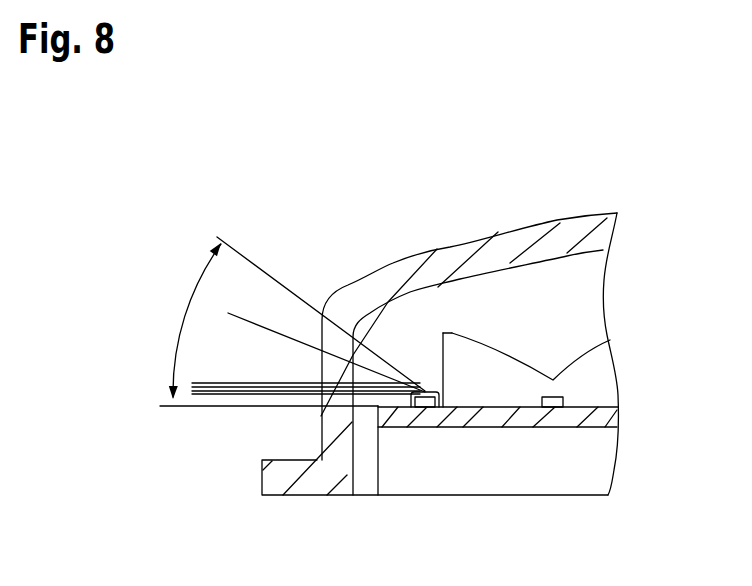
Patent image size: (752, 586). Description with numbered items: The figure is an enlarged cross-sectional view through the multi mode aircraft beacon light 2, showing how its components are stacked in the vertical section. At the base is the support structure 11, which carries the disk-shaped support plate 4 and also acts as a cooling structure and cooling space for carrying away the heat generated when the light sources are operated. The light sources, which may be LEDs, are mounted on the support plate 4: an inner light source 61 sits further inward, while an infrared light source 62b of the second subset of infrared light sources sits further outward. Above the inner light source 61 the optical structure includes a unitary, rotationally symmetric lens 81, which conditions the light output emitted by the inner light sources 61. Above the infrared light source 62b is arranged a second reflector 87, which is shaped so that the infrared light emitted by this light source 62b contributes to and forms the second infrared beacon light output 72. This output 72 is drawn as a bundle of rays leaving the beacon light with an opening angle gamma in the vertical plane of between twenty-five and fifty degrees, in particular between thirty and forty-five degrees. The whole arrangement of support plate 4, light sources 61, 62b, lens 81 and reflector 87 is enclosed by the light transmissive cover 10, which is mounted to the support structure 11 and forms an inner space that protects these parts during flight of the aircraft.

The aircraft beacon light 2 is at (506, 138).
The support plate 4 is at (621, 413).
The light transmissive cover 10 is at (477, 250).
The support structure 11 is at (590, 477).
The inner light source 61 is at (553, 407).
The infrared light source of the second subset 62b is at (434, 408).
The second infrared beacon light output 72 is at (238, 170).
The lens 81 is at (553, 333).
The second reflector 87 is at (422, 390).